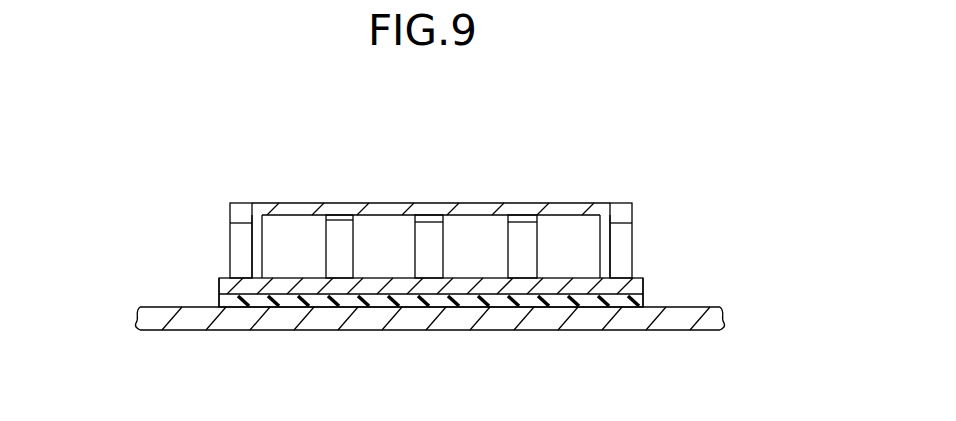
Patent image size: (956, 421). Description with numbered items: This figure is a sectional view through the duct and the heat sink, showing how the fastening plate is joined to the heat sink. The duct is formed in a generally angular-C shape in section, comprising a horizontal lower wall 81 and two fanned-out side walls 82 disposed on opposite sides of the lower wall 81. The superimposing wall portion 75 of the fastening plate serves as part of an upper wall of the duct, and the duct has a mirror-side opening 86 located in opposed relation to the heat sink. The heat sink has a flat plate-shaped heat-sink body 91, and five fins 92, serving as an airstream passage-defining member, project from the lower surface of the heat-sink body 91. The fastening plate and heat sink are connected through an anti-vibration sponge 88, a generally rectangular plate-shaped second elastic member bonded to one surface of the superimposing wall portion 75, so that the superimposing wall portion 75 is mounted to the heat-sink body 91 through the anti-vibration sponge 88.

The superimposing wall portion 75 is at (218, 284).
The lower wall 81 is at (468, 210).
The side walls 82 is at (257, 242).
The mirror-side opening 86 is at (261, 260).
The anti-vibration sponge 88 is at (638, 292).
The heat-sink body 91 is at (713, 320).
The fins 92 is at (338, 228).